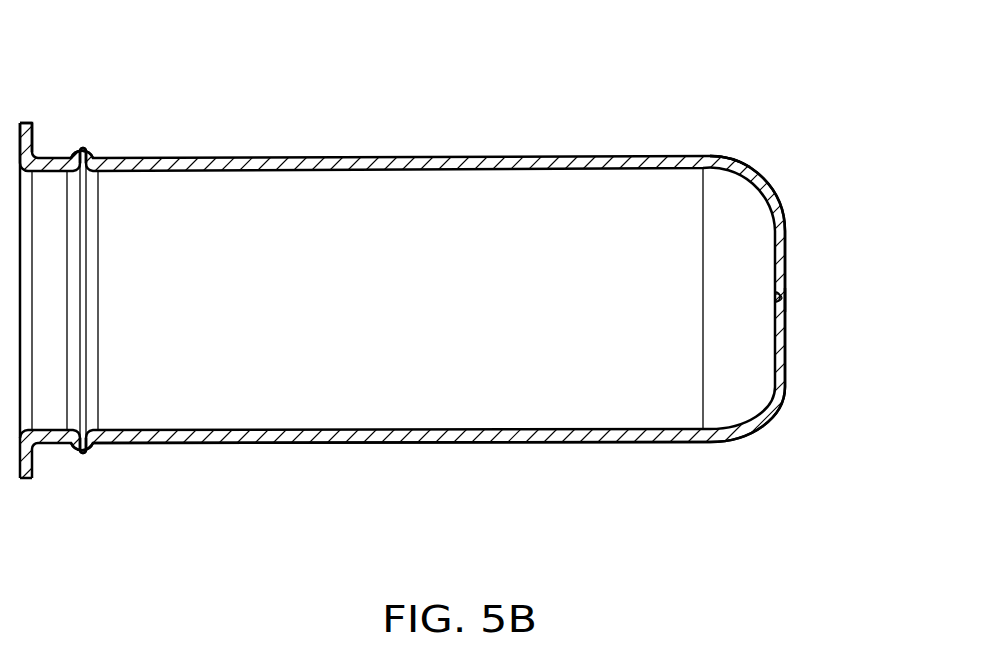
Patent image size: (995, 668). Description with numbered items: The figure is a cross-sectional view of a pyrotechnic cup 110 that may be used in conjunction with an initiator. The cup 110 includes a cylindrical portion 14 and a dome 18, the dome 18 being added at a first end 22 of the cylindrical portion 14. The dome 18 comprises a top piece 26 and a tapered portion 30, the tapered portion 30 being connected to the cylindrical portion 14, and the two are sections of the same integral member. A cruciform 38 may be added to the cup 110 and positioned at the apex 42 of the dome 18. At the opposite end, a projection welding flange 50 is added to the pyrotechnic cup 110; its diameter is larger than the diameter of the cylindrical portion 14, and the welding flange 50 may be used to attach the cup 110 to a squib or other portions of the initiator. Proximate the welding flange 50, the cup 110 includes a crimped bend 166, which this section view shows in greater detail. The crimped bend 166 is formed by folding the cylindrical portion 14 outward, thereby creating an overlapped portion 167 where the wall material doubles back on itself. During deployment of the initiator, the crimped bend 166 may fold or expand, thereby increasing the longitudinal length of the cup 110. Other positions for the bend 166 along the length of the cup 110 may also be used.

The cylindrical portion 14 is at (400, 157).
The dome 18 is at (763, 184).
The first end 22 is at (787, 231).
The top piece 26 is at (781, 386).
The tapered portion 30 is at (718, 156).
The cruciform 38 is at (782, 296).
The apex 42 is at (808, 300).
The projection welding flange 50 is at (34, 122).
The pyrotechnic cup 110 is at (453, 455).
The crimped bend 166 is at (92, 146).
The overlapped portion 167 is at (97, 128).